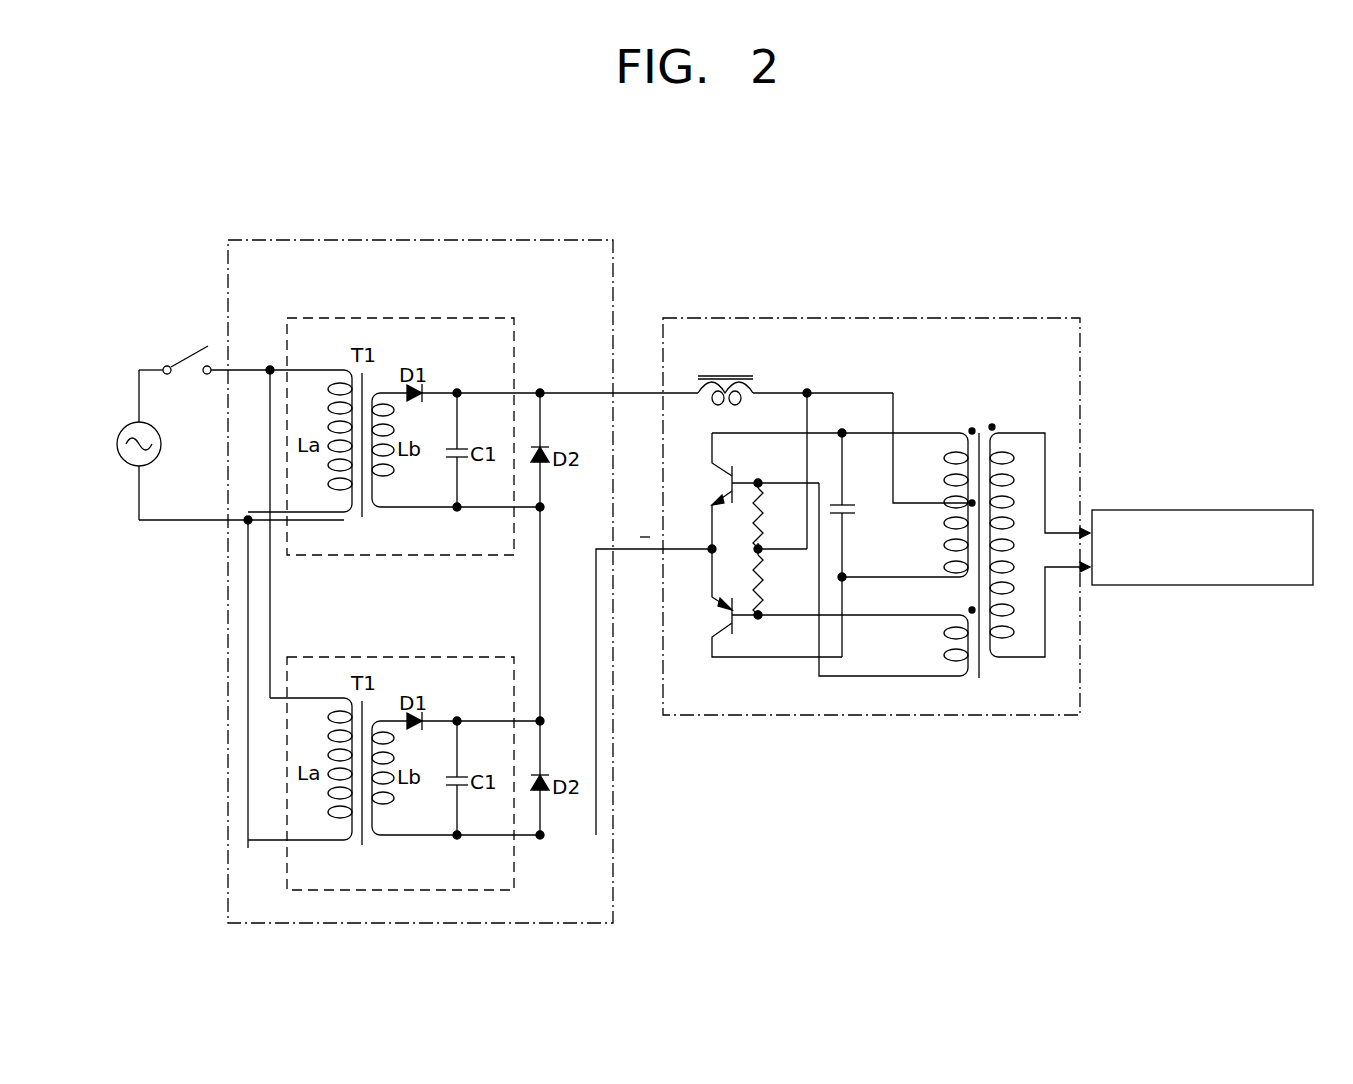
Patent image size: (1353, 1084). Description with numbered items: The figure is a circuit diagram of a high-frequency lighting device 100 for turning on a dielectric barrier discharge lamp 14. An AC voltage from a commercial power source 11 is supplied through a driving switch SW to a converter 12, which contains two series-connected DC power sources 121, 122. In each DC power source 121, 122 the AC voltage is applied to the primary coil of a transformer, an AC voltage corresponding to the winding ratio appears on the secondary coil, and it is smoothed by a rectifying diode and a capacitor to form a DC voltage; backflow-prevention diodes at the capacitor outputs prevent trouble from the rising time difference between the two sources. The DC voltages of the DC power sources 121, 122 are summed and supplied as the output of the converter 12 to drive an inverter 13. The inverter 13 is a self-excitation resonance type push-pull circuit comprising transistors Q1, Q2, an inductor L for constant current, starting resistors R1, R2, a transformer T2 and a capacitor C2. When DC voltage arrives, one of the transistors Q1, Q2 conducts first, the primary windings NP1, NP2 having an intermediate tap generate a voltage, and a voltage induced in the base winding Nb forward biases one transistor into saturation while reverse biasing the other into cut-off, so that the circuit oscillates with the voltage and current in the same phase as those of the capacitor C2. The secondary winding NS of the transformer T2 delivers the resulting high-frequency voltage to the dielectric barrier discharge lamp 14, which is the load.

The high-frequency lighting device 100 is at (741, 795).
The commercial power source 11 is at (123, 424).
The driving switch SW is at (204, 347).
The converter 12 is at (347, 240).
The DC power source 121 is at (446, 318).
The DC power source 122 is at (446, 657).
The inverter 13 is at (809, 318).
The dielectric barrier discharge lamp 14 is at (1191, 510).
The inductor L is at (725, 375).
The transistor Q1 is at (702, 491).
The transistor Q2 is at (757, 603).
The starting resistor R1 is at (776, 516).
The starting resistor R2 is at (776, 582).
The capacitor C2 is at (854, 545).
The transformer T2 is at (991, 534).
The primary winding NP1 is at (930, 474).
The primary winding NP2 is at (930, 538).
The base winding Nb is at (936, 645).
The secondary winding NS is at (1040, 545).